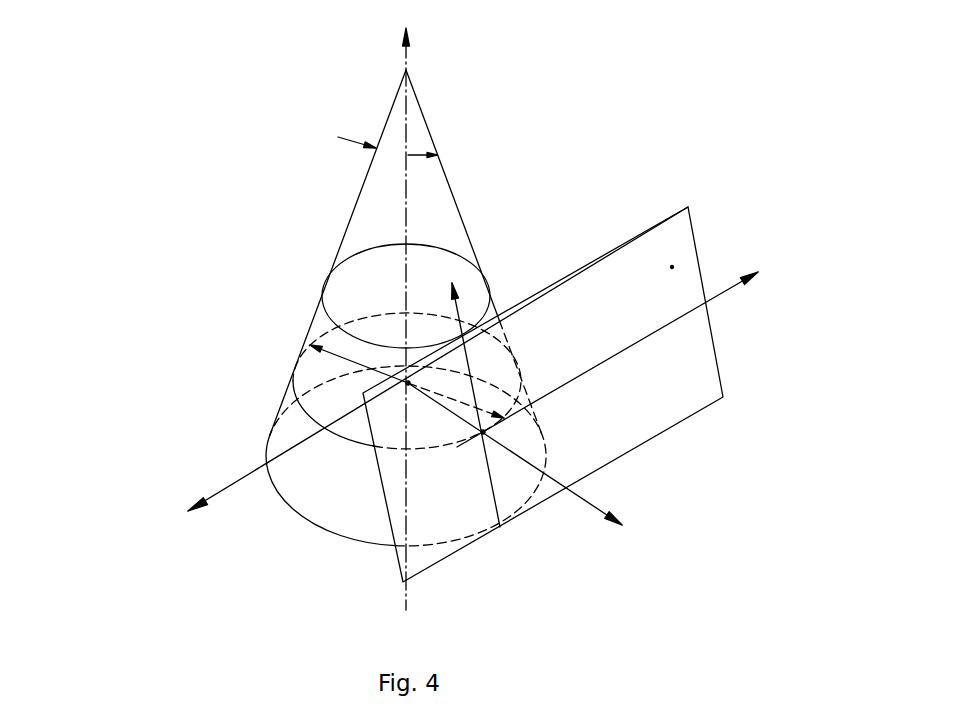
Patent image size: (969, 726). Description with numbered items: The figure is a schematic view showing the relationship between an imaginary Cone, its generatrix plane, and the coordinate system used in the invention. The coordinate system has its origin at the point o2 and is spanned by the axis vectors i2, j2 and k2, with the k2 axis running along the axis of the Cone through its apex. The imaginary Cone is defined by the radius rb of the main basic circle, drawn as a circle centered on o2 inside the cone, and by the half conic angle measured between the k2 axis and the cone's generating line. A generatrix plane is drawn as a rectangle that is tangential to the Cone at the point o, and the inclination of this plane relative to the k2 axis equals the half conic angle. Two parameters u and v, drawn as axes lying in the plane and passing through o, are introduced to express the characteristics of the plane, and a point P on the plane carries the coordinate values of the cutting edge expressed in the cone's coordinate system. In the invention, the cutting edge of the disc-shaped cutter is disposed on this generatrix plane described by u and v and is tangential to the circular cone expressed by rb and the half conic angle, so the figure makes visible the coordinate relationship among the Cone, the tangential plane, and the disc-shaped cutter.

The imaginary cone Cone is at (285, 308).
The k2(φ2) axis vector k2 is at (438, 26).
The i2(φ2) axis vector i2 is at (116, 458).
The j2(φ2) axis vector j2 is at (655, 504).
The origin O2 of coordinate system o2 is at (407, 381).
The radius of the main basic circle rb is at (407, 381).
The point P(x2, y2, z2) P is at (672, 267).
The tangent point o is at (475, 449).
The generatrix plane parameter u is at (613, 359).
The generatrix plane parameter v is at (461, 399).